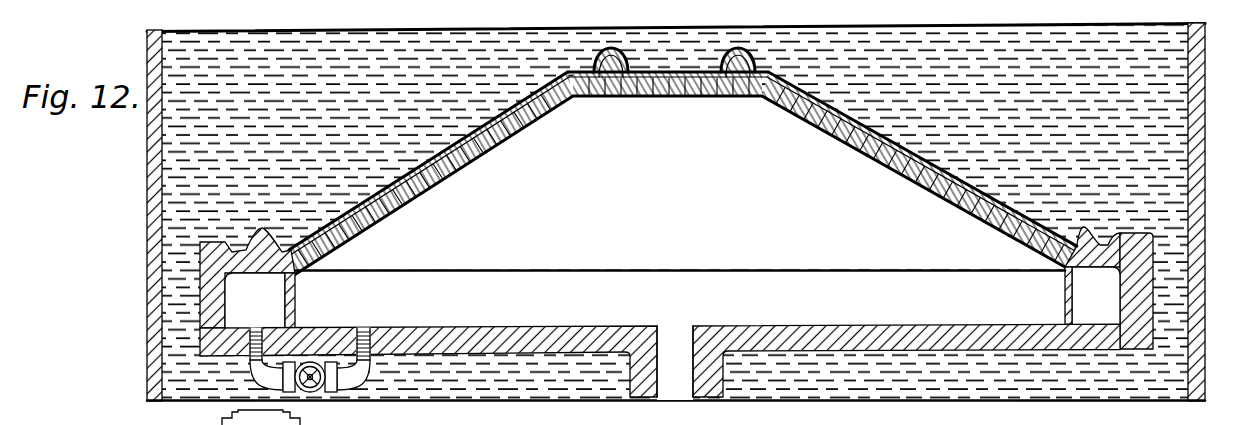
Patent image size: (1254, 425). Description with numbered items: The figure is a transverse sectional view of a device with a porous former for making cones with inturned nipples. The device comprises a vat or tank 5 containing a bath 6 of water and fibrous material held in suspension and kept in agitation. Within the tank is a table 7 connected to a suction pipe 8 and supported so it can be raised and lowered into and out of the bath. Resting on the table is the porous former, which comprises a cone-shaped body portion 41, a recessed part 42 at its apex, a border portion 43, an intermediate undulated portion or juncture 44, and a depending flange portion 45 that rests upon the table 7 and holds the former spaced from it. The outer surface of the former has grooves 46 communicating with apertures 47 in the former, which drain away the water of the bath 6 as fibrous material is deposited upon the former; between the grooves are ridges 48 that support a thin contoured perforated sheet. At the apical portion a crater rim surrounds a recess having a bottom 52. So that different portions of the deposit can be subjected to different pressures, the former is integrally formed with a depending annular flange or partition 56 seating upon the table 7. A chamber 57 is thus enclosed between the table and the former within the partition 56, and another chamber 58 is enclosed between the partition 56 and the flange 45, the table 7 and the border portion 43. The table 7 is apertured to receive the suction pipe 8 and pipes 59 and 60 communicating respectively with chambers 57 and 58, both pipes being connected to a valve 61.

The vat or tank 5 is at (1205, 125).
The bath 6 is at (1153, 90).
The table 7 is at (977, 354).
The suction pipe 8 is at (680, 400).
The cone-shaped body portion 41 is at (472, 158).
The recessed part 42 is at (672, 98).
The border portion 43 is at (1153, 258).
The intermediate undulated portion or juncture 44 is at (830, 130).
The depending flange portion 45 is at (1096, 296).
The grooves 46 is at (864, 152).
The apertures 47 is at (422, 196).
The ridges 48 is at (906, 178).
The bottom 52 is at (698, 97).
The depending annular flange or partition 56 is at (297, 286).
The chamber 57 is at (706, 300).
The chamber 58 is at (1066, 287).
The pipe 59 is at (368, 330).
The pipe 60 is at (257, 329).
The valve 61 is at (316, 392).